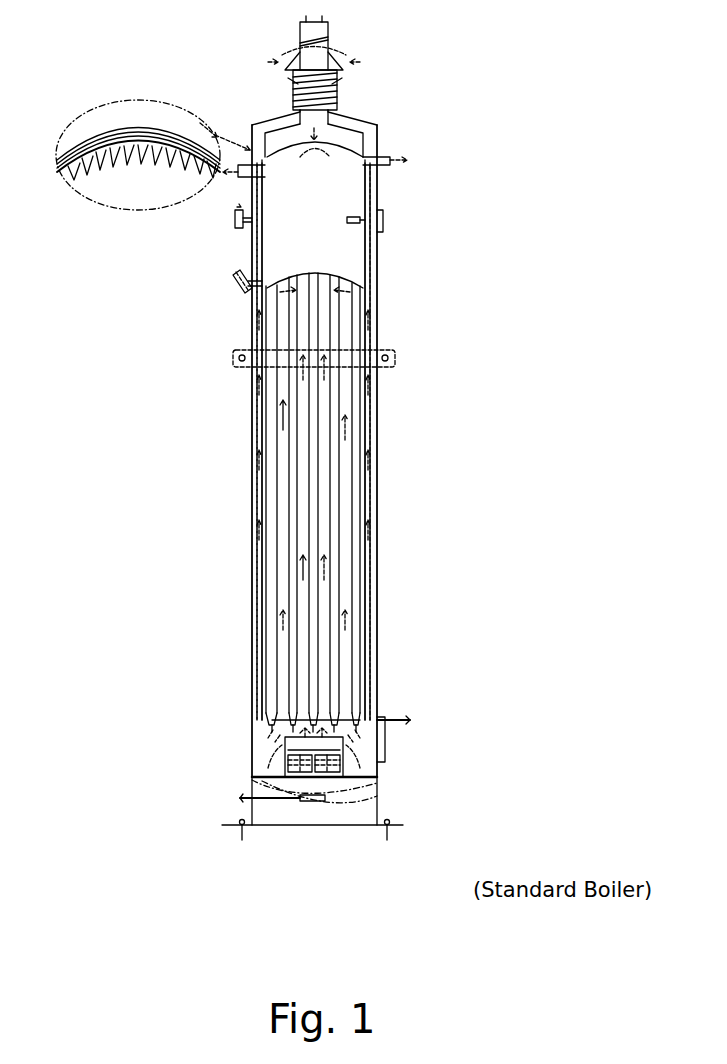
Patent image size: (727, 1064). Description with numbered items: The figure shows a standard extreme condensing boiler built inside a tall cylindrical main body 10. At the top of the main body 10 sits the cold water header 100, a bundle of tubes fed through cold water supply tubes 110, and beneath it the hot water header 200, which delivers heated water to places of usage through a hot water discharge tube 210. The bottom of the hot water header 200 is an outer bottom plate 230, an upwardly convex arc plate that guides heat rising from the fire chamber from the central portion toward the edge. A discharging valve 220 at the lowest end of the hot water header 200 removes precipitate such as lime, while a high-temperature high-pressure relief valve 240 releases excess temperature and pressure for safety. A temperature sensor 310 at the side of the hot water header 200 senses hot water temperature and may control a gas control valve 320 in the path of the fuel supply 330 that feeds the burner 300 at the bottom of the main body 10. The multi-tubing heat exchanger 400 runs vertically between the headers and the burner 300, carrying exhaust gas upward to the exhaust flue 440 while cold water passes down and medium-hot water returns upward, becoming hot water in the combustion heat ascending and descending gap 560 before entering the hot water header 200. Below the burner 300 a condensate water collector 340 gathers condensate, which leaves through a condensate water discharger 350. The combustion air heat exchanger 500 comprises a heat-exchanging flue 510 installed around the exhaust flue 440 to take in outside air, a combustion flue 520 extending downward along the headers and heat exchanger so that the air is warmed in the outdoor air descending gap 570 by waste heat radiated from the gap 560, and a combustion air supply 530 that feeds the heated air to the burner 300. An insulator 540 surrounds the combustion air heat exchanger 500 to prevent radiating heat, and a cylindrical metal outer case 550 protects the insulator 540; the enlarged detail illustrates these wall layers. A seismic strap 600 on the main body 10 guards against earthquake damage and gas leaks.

The main body 10 is at (383, 312).
The cold water header 100 is at (340, 152).
The cold water supply tube 110 is at (388, 157).
The hot water header 200 is at (357, 183).
The hot water discharge tube 210 is at (247, 177).
The discharging valve 220 is at (233, 278).
The outer bottom plate 230 is at (345, 280).
The high-temperature high-pressure relief valve 240 is at (235, 220).
The burner 300 is at (282, 743).
The temperature sensor 310 is at (384, 222).
The gas control valve 320 is at (387, 747).
The fuel supply 330 is at (400, 717).
The condensate water collector 340 is at (367, 780).
The condensate water discharger 350 is at (357, 802).
The multi-tubing heat exchanger 400 is at (343, 490).
The exhaust flue 440 is at (300, 34).
The combustion air heat exchanger 500 is at (268, 108).
The heat-exchanging flue 510 is at (337, 84).
The combustion flue 520 is at (293, 88).
The combustion air supply 530 is at (280, 758).
The insulator 540 is at (256, 532).
The outer case 550 is at (120, 130).
The combustion heat ascending and descending gap 560 is at (257, 428).
The outdoor air descending gap 570 is at (83, 143).
The seismic strap 600 is at (396, 358).